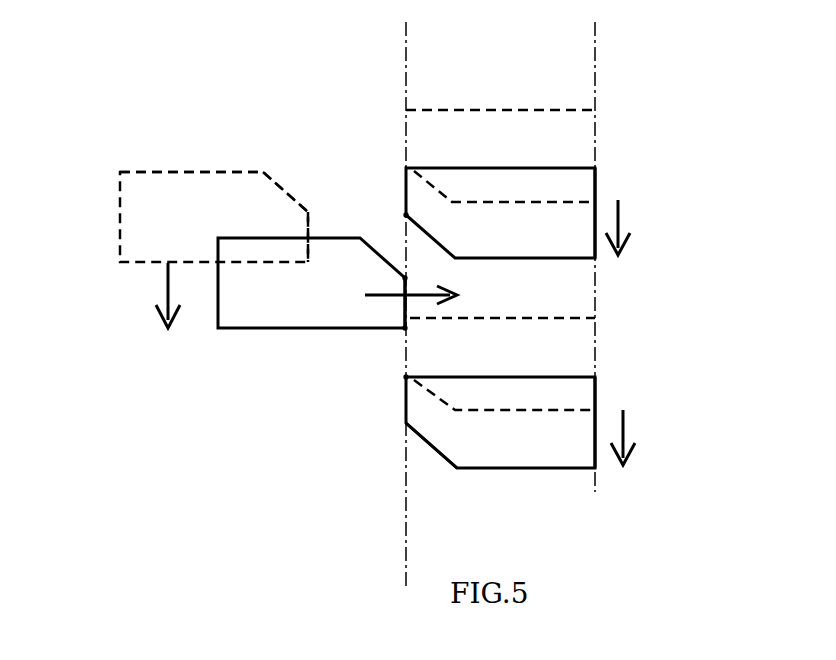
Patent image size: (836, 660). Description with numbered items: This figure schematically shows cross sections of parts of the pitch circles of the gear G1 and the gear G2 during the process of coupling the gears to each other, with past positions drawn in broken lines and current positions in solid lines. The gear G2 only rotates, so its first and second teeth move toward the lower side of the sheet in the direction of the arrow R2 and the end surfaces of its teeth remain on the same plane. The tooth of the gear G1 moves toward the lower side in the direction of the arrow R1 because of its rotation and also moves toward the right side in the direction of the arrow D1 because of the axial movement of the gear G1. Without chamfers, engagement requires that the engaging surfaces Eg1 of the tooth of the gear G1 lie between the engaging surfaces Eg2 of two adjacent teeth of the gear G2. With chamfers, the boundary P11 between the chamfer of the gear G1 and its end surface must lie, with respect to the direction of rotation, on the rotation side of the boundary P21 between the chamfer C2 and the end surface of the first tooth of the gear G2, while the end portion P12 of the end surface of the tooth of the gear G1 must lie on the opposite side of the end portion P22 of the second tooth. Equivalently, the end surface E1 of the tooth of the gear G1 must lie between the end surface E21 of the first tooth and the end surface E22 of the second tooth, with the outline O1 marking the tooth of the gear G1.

The gear G1 is at (118, 192).
The engaging surfaces Eg1 is at (192, 262).
The outer edge of first gear O1 is at (273, 187).
The arrow D1 is at (382, 297).
The end surface E1 is at (310, 227).
The boundary P11 is at (413, 272).
The end portion P12 is at (410, 330).
The gear G2 is at (460, 110).
The end surface E21 is at (406, 195).
The boundary P21 is at (406, 215).
The end surface E22 is at (406, 400).
The end portion P22 is at (406, 377).
The chamfer C2 is at (440, 458).
The engaging surfaces Eg2 is at (560, 262).
The arrow R1 is at (167, 283).
The arrow R2 is at (620, 218).